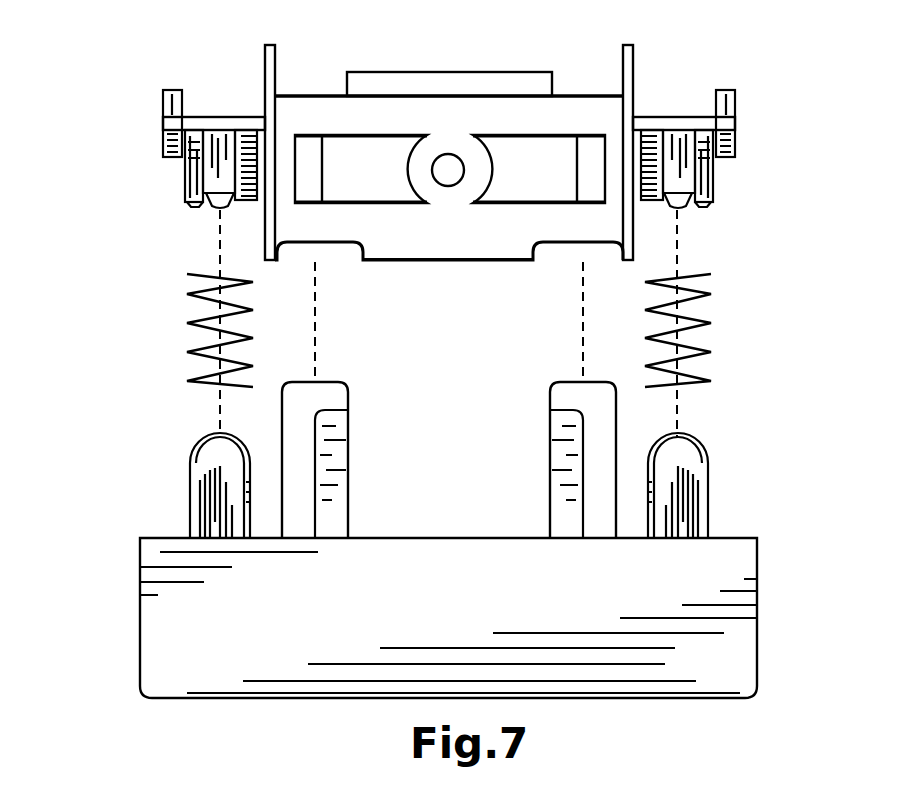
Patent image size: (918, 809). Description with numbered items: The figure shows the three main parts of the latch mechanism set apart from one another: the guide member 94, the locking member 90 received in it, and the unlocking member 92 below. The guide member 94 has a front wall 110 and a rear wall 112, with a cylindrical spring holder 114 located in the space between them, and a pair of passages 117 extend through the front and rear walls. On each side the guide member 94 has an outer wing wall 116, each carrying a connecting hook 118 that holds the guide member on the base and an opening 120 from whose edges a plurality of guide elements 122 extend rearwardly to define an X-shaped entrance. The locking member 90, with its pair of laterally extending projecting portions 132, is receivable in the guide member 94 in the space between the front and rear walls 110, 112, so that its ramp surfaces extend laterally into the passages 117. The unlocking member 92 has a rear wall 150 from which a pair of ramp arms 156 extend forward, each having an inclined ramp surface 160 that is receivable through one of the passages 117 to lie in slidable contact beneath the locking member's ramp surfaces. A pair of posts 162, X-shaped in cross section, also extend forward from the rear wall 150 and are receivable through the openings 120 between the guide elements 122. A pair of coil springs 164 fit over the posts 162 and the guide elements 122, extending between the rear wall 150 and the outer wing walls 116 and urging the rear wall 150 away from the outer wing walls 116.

The locking member 90 is at (343, 158).
The unlocking member 92 is at (138, 620).
The guide member 94 is at (160, 122).
The front wall 110 is at (590, 97).
The rear wall 112 is at (424, 262).
The cylindrical spring holder 114 is at (418, 173).
The outer wing walls 116 is at (218, 117).
The passages 117 is at (329, 264).
The connecting hook 118 is at (178, 90).
The opening 120 is at (209, 230).
The guide elements 122 is at (243, 215).
The projecting portions 132 is at (380, 168).
The rear wall 150 is at (628, 700).
The ramp arms 156 is at (279, 418).
The inclined ramp surface 160 is at (565, 492).
The posts 162 is at (190, 483).
The coil springs 164 is at (188, 323).